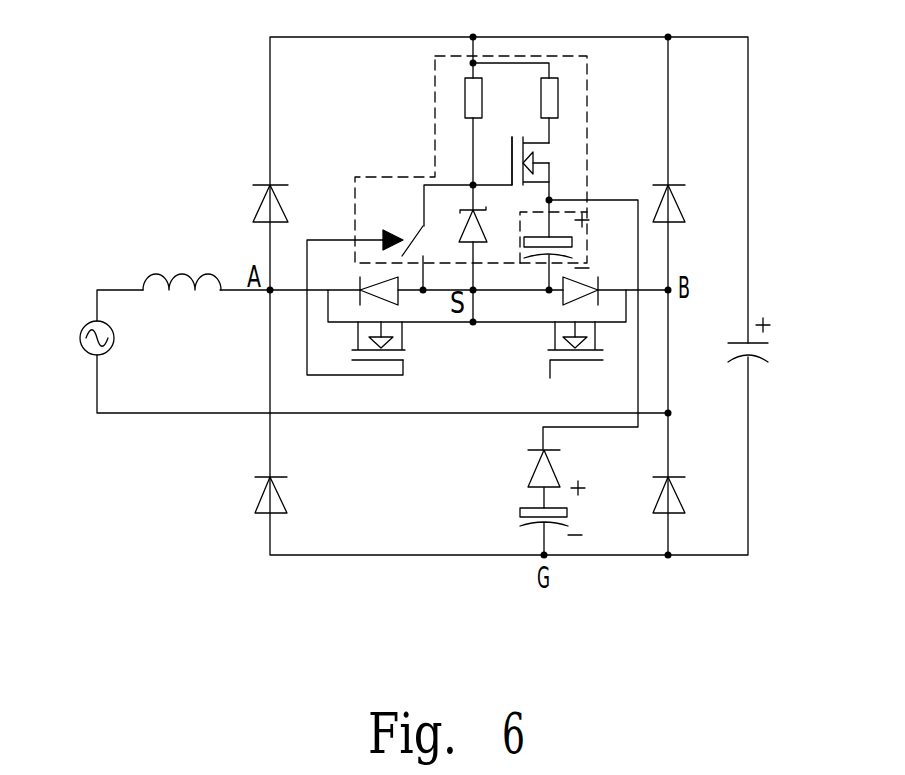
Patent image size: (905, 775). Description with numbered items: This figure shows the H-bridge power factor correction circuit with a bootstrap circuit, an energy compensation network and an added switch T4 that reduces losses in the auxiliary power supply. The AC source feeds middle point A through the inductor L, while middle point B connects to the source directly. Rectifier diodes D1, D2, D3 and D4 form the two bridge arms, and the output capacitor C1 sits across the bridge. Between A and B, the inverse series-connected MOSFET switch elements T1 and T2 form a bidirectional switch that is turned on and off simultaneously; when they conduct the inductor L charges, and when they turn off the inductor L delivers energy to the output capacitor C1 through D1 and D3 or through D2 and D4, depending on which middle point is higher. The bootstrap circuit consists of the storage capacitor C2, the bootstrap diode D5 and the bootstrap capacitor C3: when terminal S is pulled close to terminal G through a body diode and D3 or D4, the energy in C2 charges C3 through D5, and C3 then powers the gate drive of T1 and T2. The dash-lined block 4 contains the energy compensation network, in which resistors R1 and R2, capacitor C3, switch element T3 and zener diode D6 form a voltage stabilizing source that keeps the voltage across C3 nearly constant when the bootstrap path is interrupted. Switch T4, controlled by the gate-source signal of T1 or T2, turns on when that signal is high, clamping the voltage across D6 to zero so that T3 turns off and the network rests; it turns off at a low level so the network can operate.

The block 4 is at (366, 177).
The inductor L is at (182, 266).
The rectifier diode D1 is at (265, 186).
The rectifier diode D2 is at (676, 187).
The rectifier diode D3 is at (684, 491).
The rectifier diode D4 is at (252, 495).
The bootstrap diode D5 is at (561, 474).
The zener diode D6 is at (487, 216).
The resistor R1 is at (563, 98).
The resistor R2 is at (459, 98).
The output capacitor C1 is at (766, 336).
The storage capacitor C2 is at (565, 518).
The bootstrap capacitor C3 is at (568, 240).
The switch element T1 is at (378, 365).
The switch element T2 is at (575, 360).
The switch element T3 is at (546, 161).
The switch T4 is at (403, 225).